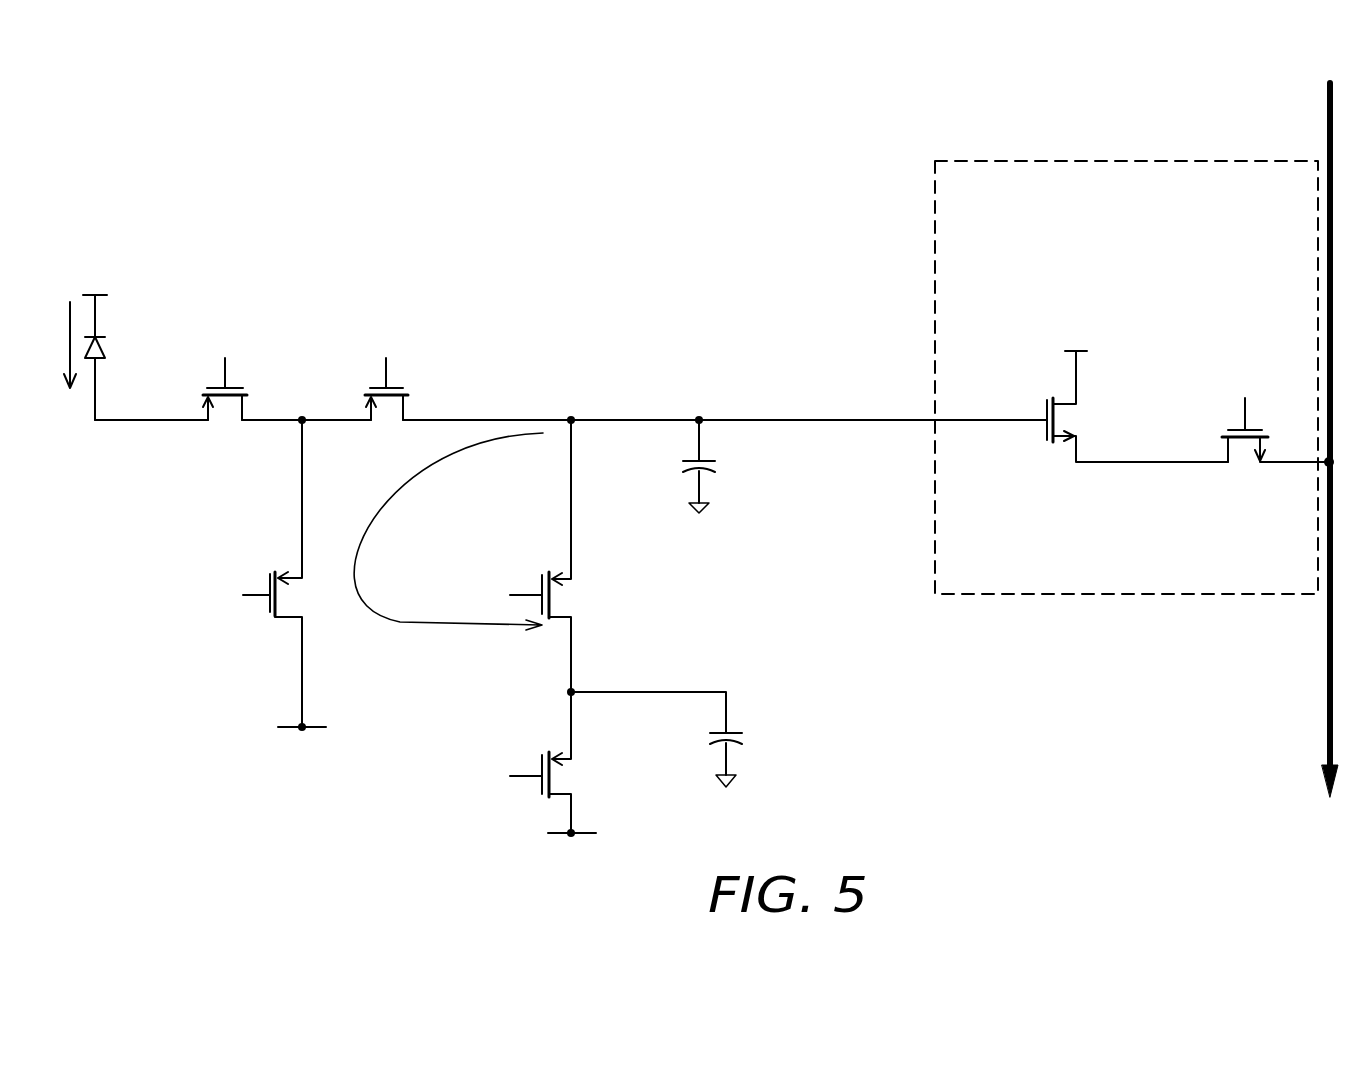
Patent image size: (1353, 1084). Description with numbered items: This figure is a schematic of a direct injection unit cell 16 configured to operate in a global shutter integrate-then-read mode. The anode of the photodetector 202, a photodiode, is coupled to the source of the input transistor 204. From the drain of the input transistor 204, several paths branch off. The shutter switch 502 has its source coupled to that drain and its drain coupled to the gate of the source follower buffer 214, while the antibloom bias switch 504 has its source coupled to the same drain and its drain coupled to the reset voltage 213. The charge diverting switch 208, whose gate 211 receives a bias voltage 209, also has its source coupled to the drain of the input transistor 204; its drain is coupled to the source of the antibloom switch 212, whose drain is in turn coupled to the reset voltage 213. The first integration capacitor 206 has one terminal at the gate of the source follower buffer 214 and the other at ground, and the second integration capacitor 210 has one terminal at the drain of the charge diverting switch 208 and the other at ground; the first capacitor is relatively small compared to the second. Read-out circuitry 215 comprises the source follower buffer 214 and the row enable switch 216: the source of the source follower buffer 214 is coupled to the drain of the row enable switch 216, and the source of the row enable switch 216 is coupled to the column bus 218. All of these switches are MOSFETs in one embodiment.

The unit cell 16 is at (358, 165).
The photodetector 202 is at (102, 336).
The input transistor 204 is at (232, 388).
The shutter switch 502 is at (392, 388).
The antibloom bias switch 504 is at (270, 578).
The reset voltage 213 is at (292, 727).
The charge diverting switch 208 is at (540, 583).
The gate 211 is at (533, 593).
The bias voltage 209 is at (470, 588).
The first integration capacitor 206 is at (703, 468).
The second integration capacitor 210 is at (735, 733).
The antibloom switch 212 is at (545, 758).
The read-out circuitry 215 is at (918, 171).
The source follower buffer 214 is at (1047, 412).
The row enable switch 216 is at (1245, 440).
The column bus 218 is at (1327, 760).